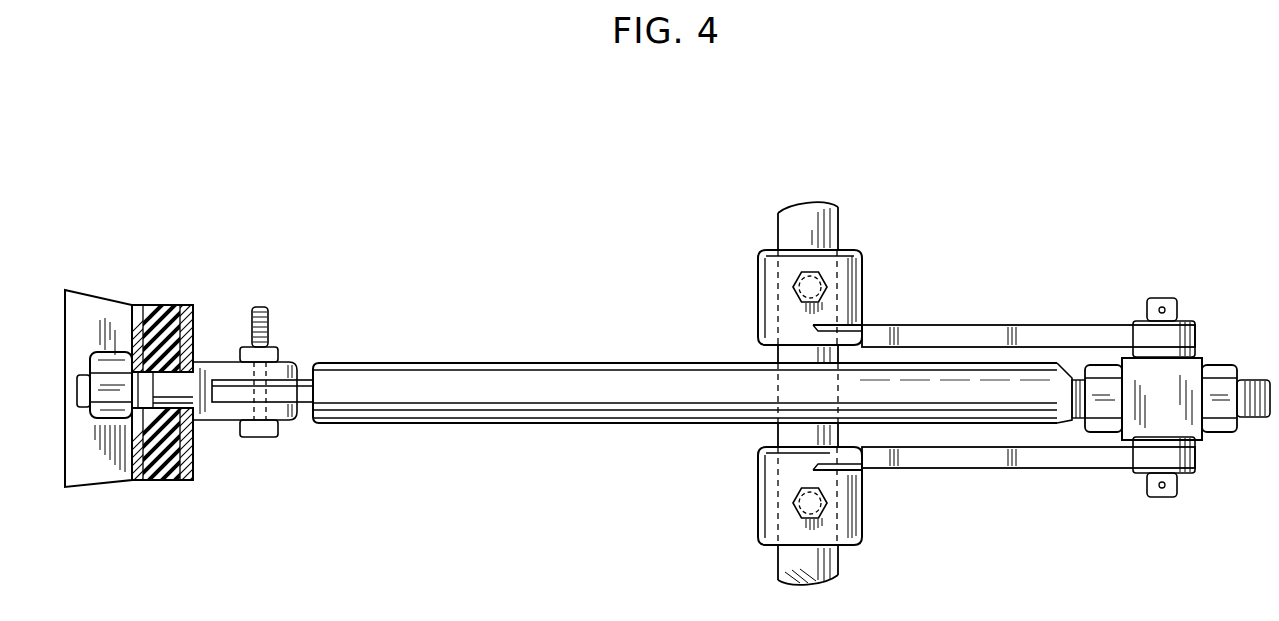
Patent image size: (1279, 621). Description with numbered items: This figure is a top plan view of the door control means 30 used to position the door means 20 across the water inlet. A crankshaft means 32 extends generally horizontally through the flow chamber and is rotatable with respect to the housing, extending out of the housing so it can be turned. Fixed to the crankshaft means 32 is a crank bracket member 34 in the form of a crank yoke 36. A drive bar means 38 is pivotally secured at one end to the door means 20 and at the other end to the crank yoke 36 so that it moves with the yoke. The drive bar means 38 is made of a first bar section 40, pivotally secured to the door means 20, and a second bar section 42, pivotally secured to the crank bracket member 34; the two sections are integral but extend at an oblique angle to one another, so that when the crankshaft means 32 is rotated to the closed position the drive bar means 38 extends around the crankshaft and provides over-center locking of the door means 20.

The door means 20 is at (176, 307).
The door control means 30 is at (1188, 365).
The crankshaft means 32 is at (785, 222).
The crank bracket member 34 is at (1128, 460).
The crank yoke 36 is at (1007, 330).
The drive bar means 38 is at (700, 362).
The first bar section 40 is at (463, 361).
The second bar section 42 is at (922, 385).